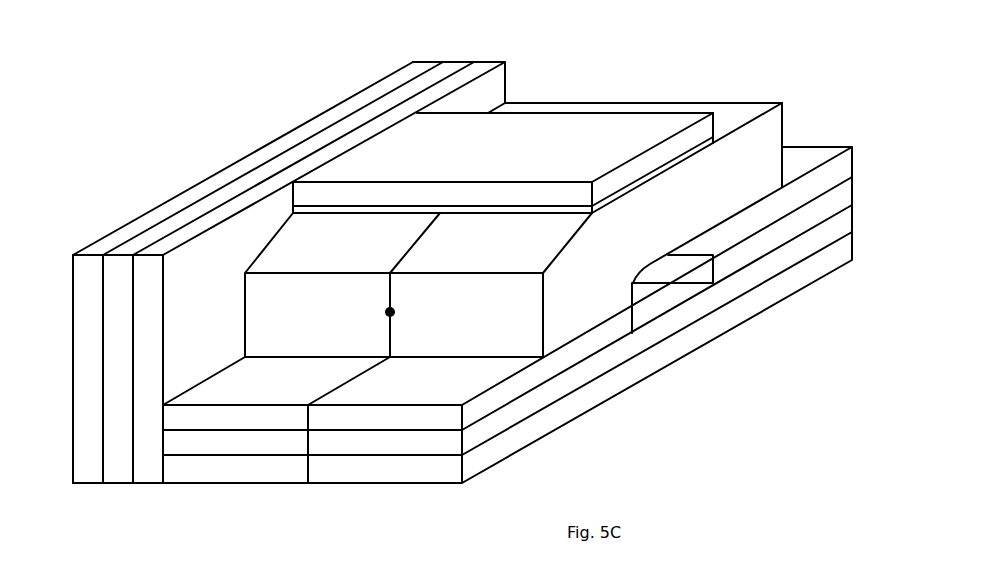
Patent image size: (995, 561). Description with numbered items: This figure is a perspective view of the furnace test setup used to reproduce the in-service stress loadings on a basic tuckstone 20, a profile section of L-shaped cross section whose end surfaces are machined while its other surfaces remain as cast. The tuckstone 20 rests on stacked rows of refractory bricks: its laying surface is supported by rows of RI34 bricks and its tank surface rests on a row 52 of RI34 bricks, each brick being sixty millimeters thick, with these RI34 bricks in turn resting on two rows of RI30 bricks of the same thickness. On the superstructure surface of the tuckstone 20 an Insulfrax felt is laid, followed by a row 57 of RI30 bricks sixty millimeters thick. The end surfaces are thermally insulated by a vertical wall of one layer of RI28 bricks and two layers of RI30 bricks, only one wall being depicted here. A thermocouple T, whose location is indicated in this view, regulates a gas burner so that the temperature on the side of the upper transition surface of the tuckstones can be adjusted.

The row of RI30 bricks 57 is at (397, 143).
The basic tuckstone 20 is at (613, 290).
The thermocouple T is at (403, 313).
The row of RI34 bricks 52 is at (572, 362).